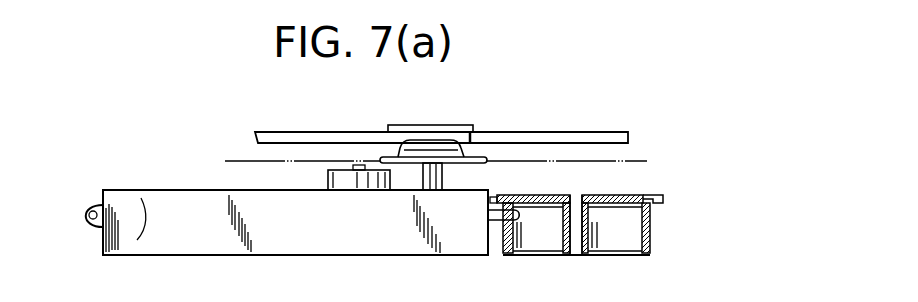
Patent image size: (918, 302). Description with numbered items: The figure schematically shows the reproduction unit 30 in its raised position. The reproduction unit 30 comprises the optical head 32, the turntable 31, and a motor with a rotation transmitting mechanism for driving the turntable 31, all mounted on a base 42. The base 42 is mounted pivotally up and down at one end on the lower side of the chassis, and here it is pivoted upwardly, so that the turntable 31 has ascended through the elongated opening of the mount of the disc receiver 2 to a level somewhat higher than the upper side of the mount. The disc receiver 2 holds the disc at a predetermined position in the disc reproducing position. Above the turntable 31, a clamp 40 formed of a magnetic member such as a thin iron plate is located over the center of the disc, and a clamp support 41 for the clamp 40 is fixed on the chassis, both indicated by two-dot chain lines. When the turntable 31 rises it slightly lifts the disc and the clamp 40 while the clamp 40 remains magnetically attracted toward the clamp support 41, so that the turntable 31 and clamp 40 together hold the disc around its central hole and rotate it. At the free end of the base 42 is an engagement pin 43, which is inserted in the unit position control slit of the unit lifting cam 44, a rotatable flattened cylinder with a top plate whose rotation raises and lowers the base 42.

The reproduction unit 30 is at (119, 189).
The base 42 is at (192, 198).
The optical head 32 is at (328, 183).
The turntable 31 is at (447, 165).
The clamp 40 is at (476, 124).
The clamp support 41 is at (618, 132).
The disc receiver 2 is at (630, 163).
The engagement pin 43 is at (520, 216).
The unit lifting cam 44 is at (651, 227).